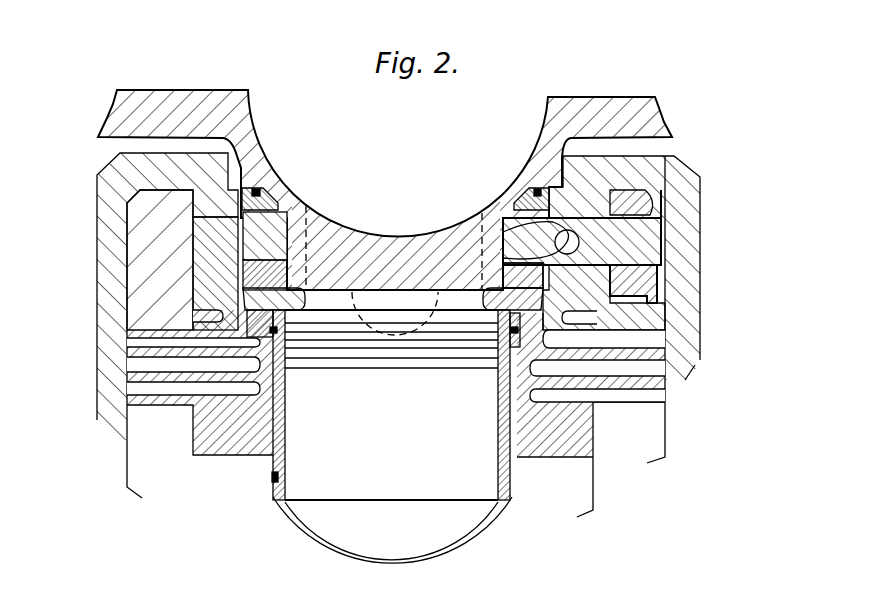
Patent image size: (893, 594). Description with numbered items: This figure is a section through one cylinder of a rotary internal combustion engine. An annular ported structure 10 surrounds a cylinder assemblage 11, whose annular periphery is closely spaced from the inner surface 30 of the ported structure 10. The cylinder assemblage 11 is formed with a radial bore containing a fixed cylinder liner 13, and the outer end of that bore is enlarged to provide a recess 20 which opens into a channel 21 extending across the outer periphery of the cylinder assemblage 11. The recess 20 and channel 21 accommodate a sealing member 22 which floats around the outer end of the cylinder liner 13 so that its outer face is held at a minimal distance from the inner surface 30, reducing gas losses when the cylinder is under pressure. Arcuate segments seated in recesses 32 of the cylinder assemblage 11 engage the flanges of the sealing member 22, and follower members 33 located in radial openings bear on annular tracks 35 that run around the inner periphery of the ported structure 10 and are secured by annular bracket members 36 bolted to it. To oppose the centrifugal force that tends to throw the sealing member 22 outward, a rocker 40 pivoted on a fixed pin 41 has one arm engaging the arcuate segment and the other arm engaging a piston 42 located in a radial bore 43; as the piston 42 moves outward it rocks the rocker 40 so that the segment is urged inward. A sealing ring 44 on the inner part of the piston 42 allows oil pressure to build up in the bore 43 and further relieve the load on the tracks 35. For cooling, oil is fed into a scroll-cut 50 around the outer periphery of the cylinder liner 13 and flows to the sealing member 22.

The annular ported structure 10 is at (201, 102).
The cylinder assemblage 11 is at (150, 302).
The cylinder liner 13 is at (285, 432).
The recess 20 is at (172, 355).
The channel 21 is at (594, 300).
The sealing member 22 is at (235, 275).
The inner surface of the ported structure 30 is at (333, 280).
The recess 32 is at (196, 233).
The follower member 33 is at (284, 212).
The annular track 35 is at (268, 187).
The annular bracket member 36 is at (256, 186).
The rocker 40 is at (503, 226).
The fixed pin 41 is at (605, 238).
The piston 42 is at (646, 204).
The bore 43 is at (613, 190).
The sealing ring 44 is at (613, 298).
The scroll-cut 50 is at (276, 477).